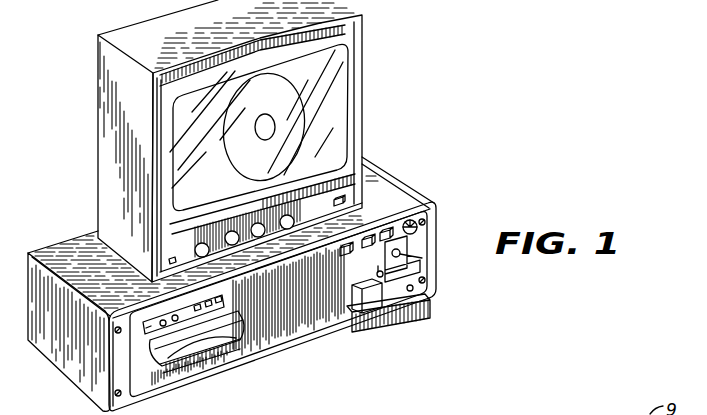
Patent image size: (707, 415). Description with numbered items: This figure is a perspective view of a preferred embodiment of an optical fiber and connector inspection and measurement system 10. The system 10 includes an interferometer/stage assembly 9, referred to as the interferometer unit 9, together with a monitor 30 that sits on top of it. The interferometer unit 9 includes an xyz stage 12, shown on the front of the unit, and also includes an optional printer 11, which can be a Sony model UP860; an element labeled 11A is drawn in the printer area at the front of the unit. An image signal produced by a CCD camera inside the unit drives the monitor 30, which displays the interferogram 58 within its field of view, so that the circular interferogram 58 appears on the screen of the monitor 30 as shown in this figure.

The optical fiber and connector inspection and measurement system 10 is at (255, 205).
The interferometer/stage assembly 9 is at (232, 284).
The printer 11 is at (231, 300).
The tape cassette 11A is at (237, 334).
The xyz stage 12 is at (345, 290).
The monitor 30 is at (250, 141).
The interferogram 58 is at (270, 88).